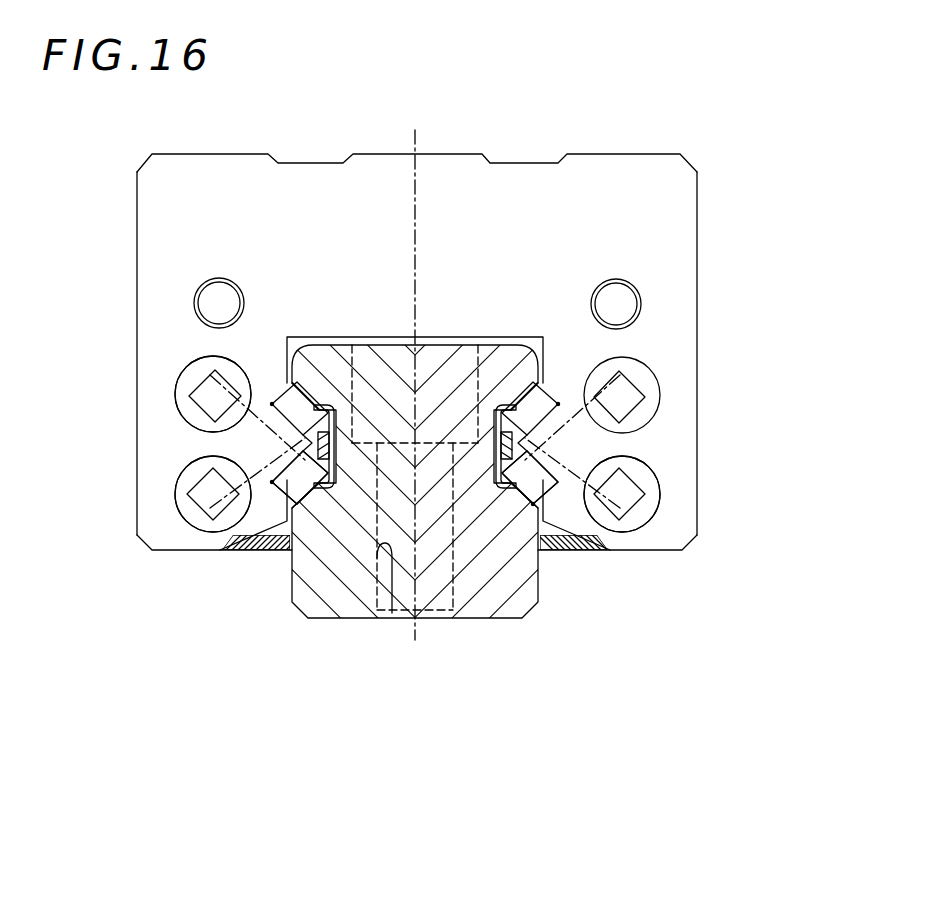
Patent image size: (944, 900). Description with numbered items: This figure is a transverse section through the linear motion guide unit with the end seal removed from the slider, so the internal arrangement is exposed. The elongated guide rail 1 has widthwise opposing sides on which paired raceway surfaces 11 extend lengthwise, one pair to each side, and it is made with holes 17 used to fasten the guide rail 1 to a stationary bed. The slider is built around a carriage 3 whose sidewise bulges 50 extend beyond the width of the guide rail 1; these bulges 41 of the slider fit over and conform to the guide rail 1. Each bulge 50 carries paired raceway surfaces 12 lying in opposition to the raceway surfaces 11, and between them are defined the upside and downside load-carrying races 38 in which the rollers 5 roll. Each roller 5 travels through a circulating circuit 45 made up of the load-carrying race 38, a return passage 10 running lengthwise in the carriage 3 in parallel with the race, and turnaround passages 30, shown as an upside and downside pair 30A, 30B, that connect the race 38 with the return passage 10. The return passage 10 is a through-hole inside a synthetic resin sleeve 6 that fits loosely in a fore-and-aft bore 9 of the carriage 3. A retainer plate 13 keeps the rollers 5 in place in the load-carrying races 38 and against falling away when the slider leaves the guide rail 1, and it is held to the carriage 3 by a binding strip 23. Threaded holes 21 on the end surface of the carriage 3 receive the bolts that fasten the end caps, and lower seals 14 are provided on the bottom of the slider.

The guide rail 1 is at (452, 612).
The carriage 3 is at (598, 183).
The roller 5 is at (297, 385).
The sleeve 6 is at (192, 376).
The fore-and-aft bore 9 is at (202, 371).
The return passage 10 is at (639, 388).
The raceway surface 11 is at (316, 390).
The raceway surface 12 is at (272, 403).
The retainer plate 13 is at (328, 490).
The lower seal 14 is at (572, 490).
The hole 17 is at (377, 612).
The threaded hole 21 is at (209, 303).
The binding strip 23 is at (365, 398).
The turnaround passage 30 is at (272, 480).
The turnaround passage 30A is at (235, 448).
The turnaround passage 30B is at (237, 447).
The load-carrying race 38 is at (320, 487).
The bulge 41 is at (147, 505).
The circulating circuit 45 is at (222, 392).
The bulge 50 is at (148, 400).